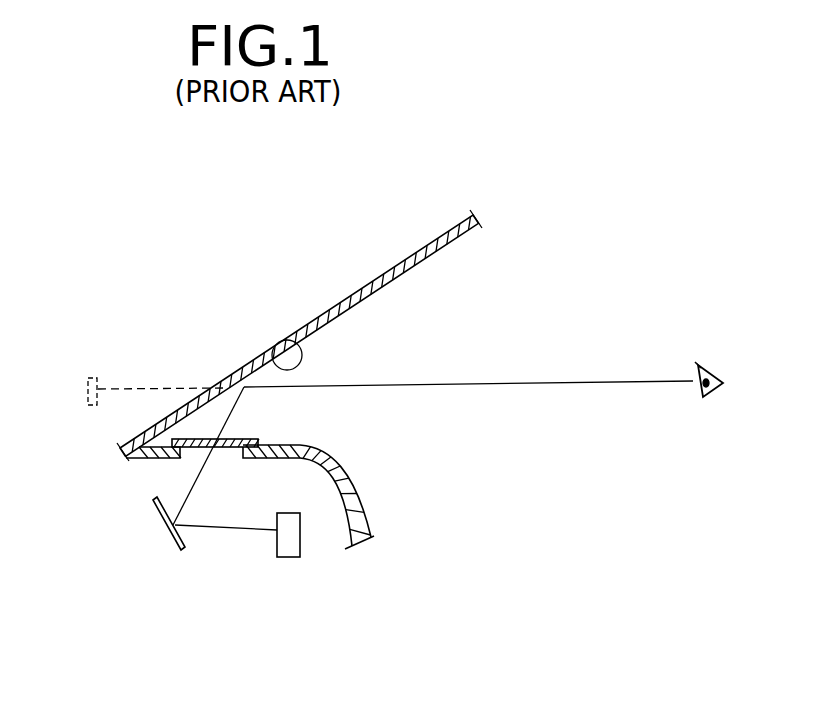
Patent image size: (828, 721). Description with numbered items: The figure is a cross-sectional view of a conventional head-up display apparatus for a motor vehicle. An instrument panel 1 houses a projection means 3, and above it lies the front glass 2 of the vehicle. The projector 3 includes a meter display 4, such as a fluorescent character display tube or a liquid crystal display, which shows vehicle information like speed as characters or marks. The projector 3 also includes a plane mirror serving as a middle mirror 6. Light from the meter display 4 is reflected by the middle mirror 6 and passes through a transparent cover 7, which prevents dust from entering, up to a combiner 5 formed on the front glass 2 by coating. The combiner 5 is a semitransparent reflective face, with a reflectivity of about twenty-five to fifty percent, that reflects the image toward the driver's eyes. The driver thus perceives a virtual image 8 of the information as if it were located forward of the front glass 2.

The instrument panel 1 is at (368, 507).
The front glass 2 is at (403, 262).
The projection means 3 is at (225, 598).
The meter display 4 is at (287, 573).
The combiner 5 is at (293, 341).
The middle mirror 6 is at (156, 518).
The transparent cover 7 is at (197, 438).
The virtual image 8 is at (87, 395).